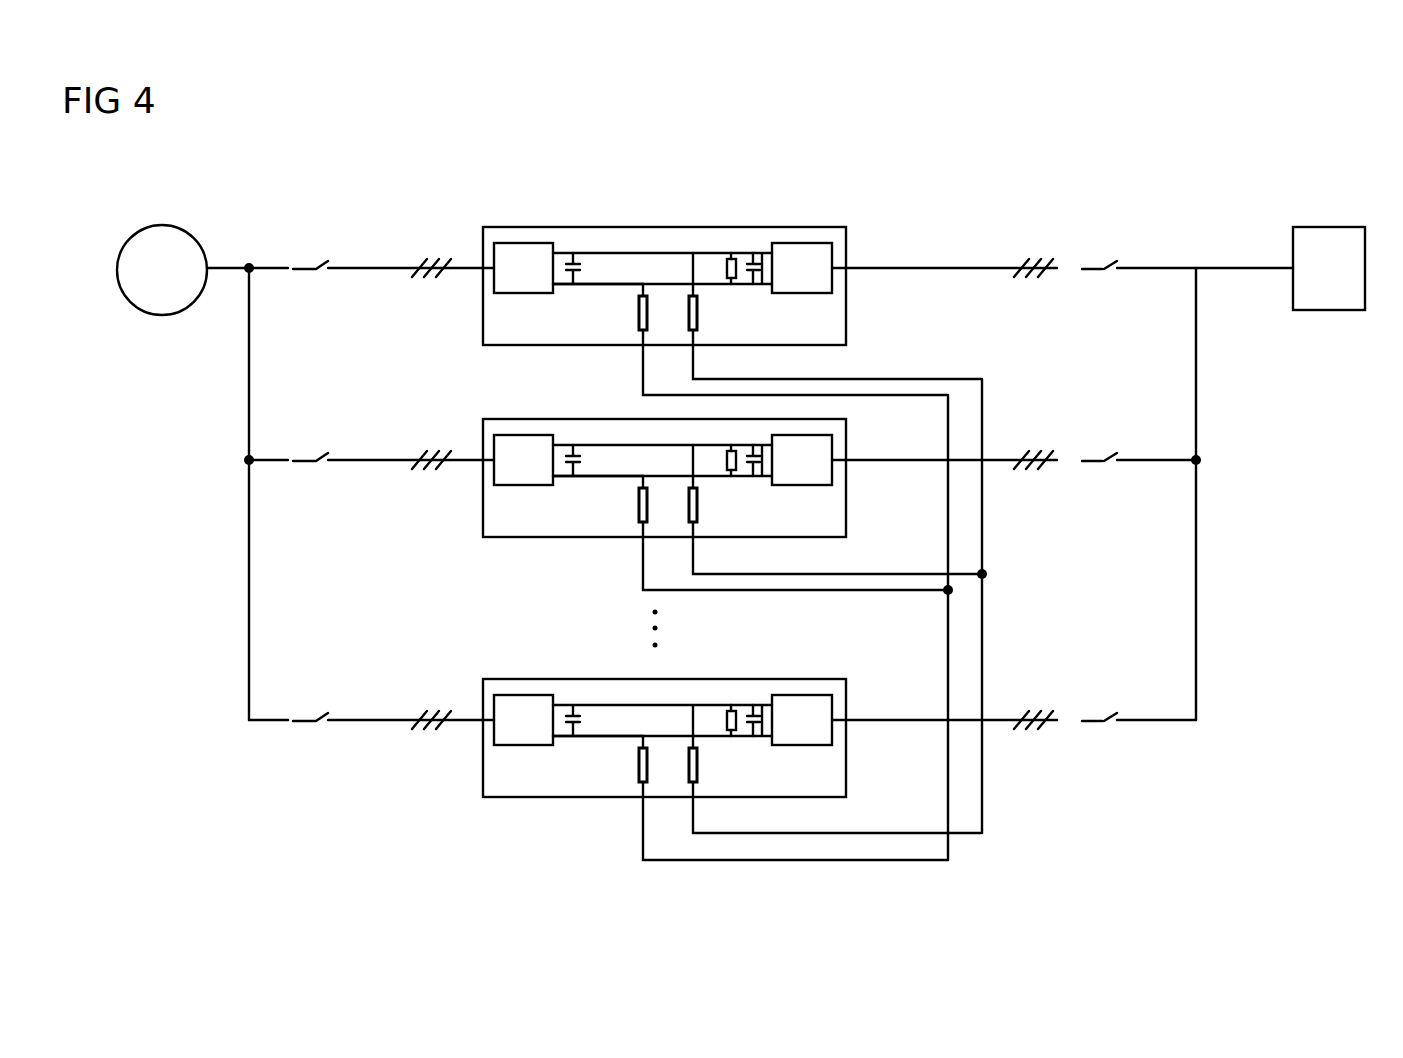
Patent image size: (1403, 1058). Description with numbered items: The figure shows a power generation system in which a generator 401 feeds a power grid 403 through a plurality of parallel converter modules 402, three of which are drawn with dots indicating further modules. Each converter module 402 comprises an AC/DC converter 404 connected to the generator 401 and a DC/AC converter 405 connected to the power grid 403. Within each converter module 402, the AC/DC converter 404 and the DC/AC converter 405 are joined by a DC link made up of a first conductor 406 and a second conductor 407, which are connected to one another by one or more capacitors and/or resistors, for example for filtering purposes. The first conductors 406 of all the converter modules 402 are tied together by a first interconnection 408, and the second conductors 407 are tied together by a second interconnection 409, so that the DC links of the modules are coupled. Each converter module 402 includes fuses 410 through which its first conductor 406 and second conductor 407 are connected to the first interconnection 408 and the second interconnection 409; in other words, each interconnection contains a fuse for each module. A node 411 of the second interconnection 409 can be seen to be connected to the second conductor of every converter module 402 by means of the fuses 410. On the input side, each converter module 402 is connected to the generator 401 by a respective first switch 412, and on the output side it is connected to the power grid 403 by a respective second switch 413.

The generator 401 is at (162, 225).
The converter module 402 is at (693, 227).
The power grid 403 is at (1310, 227).
The AC/DC converter 404 is at (514, 243).
The DC/AC converter 405 is at (798, 243).
The first conductor 406 is at (598, 253).
The second conductor 407 is at (587, 285).
The first interconnection 408 is at (982, 412).
The second interconnection 409 is at (948, 648).
The fuse 410 is at (697, 305).
The node 411 is at (982, 574).
The first switch 412 is at (320, 258).
The second switch 413 is at (1108, 258).